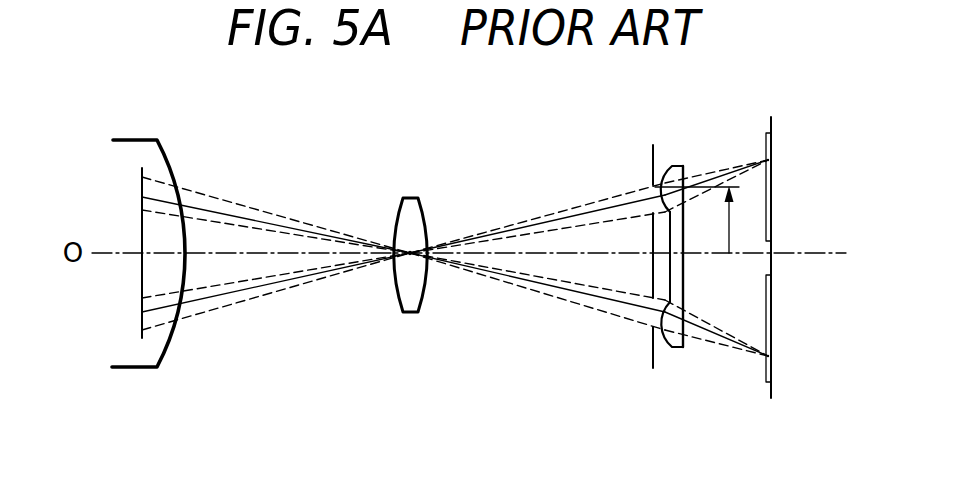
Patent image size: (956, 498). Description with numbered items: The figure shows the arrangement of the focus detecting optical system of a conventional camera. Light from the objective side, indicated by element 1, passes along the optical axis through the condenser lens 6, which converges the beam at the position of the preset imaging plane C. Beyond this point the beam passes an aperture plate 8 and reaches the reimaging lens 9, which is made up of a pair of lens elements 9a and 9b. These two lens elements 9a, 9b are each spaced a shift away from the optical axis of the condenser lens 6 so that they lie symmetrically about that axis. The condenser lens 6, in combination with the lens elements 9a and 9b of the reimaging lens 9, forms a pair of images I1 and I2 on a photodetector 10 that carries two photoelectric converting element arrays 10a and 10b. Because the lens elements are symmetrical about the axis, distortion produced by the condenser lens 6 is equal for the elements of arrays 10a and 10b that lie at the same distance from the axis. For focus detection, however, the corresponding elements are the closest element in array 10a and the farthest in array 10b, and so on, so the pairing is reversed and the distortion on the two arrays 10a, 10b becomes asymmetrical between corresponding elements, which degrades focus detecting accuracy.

The objective lens 1 is at (137, 139).
The condenser lens 6 is at (410, 197).
The preset imaging plane C is at (410, 250).
The aperture plate 8 is at (653, 160).
The reimaging lens 9 is at (700, 240).
The lens element 9a is at (688, 170).
The lens element 9b is at (675, 348).
The photodetector 10 is at (803, 230).
The photoelectric converting element array 10a is at (775, 140).
The photoelectric converting element array 10b is at (772, 313).
The image I1 is at (772, 160).
The image I2 is at (772, 358).